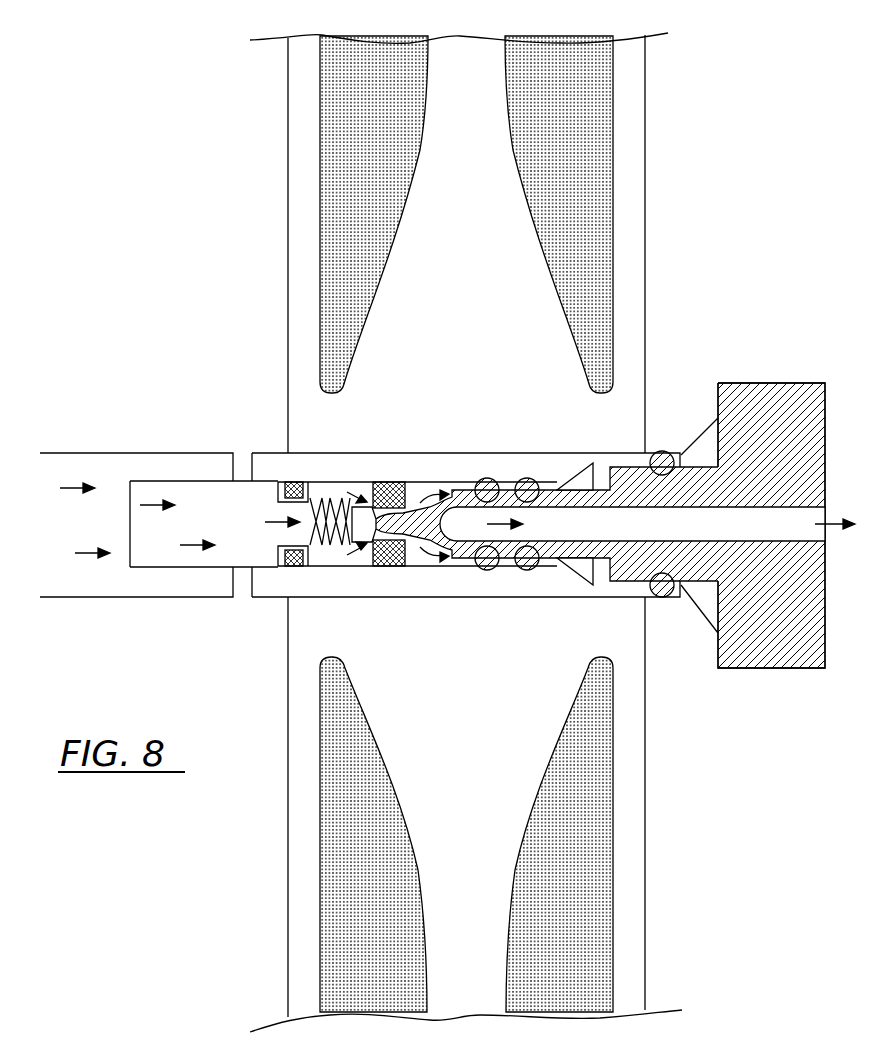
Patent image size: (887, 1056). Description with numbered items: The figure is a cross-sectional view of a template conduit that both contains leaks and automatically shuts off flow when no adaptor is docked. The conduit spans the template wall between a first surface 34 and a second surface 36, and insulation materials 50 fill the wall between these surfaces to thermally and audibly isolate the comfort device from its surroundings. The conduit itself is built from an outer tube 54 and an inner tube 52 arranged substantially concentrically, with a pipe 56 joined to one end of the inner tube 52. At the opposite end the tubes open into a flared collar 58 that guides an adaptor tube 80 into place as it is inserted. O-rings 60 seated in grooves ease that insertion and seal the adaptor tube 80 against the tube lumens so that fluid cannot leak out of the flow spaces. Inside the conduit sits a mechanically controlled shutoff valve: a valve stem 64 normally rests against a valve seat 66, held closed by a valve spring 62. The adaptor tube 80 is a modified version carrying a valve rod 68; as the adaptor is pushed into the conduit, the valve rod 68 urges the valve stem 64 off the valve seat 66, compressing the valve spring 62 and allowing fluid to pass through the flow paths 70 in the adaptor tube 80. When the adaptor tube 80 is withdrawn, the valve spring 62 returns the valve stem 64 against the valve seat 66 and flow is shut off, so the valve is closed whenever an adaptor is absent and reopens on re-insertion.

The first surface 34 is at (645, 97).
The second surface 36 is at (288, 88).
The insulation materials 50 is at (320, 248).
The inner tube 52 is at (243, 481).
The outer tube 54 is at (268, 453).
The pipe 56 is at (115, 453).
The flared collar 58 is at (577, 467).
The O-ring 60 is at (508, 480).
The valve spring 62 is at (318, 567).
The valve stem 64 is at (365, 550).
The valve seat 66 is at (385, 480).
The valve rod 68 is at (423, 560).
The flow paths 70 is at (443, 486).
The adaptor tube 80 is at (781, 383).